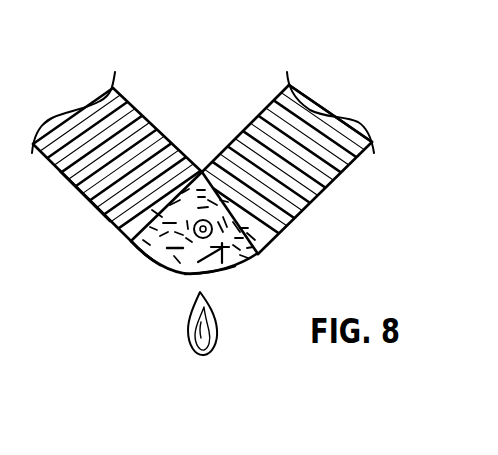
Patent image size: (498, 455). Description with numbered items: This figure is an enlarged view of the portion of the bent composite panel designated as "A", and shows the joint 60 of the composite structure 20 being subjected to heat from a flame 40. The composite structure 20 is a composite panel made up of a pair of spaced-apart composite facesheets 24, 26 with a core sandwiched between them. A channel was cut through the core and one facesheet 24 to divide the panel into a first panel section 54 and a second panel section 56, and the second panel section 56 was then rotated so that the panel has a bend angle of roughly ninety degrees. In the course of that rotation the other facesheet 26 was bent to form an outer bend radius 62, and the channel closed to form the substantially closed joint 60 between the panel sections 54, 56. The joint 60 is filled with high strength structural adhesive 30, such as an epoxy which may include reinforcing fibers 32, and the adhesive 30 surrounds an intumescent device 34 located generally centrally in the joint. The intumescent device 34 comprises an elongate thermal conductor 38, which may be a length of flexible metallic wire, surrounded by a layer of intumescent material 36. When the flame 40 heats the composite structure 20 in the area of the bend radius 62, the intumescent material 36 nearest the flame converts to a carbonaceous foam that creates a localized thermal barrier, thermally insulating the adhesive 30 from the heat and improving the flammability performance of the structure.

The composite structure 20 is at (214, 181).
The portion designated A is at (304, 65).
The composite facesheet 24 is at (138, 109).
The composite facesheet 26 is at (60, 172).
The adhesive 30 is at (258, 254).
The reinforcing fibers 32 is at (221, 258).
The intumescent device 34 is at (186, 231).
The layer of intumescent material 36 is at (203, 220).
The elongate thermal conductor 38 is at (202, 238).
The flame 40 is at (202, 337).
The first panel section 54 is at (83, 202).
The second panel section 56 is at (302, 223).
The joint 60 is at (147, 262).
The outer bend radius 62 is at (220, 272).